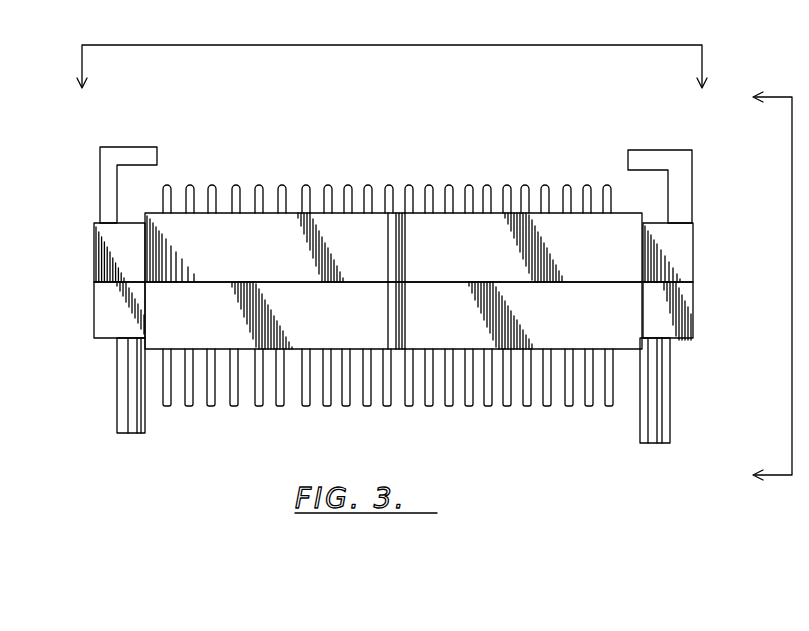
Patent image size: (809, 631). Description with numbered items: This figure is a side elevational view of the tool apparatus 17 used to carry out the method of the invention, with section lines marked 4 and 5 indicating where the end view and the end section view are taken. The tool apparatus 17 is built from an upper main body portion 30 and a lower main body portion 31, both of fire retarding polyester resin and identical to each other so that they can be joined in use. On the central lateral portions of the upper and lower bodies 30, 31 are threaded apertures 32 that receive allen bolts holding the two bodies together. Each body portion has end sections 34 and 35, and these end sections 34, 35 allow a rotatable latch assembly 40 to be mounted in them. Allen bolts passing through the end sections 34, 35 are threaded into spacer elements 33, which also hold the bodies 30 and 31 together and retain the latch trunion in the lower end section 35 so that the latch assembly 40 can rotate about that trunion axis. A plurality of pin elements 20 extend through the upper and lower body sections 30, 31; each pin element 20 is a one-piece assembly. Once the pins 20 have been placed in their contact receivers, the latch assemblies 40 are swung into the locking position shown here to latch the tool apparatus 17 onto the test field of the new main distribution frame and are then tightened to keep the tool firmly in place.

The section line 4- 4 is at (772, 290).
The section line 5- 5 is at (392, 66).
The tool apparatus 17 is at (415, 142).
The pin elements 20 is at (334, 176).
The upper main body portion 30 is at (246, 259).
The lower main body portion 31 is at (221, 332).
The threaded apertures 32 is at (388, 316).
The spacer elements 33 is at (120, 392).
The end section 34 is at (103, 263).
The end section 35 is at (104, 311).
The latch assembly 40 is at (100, 147).